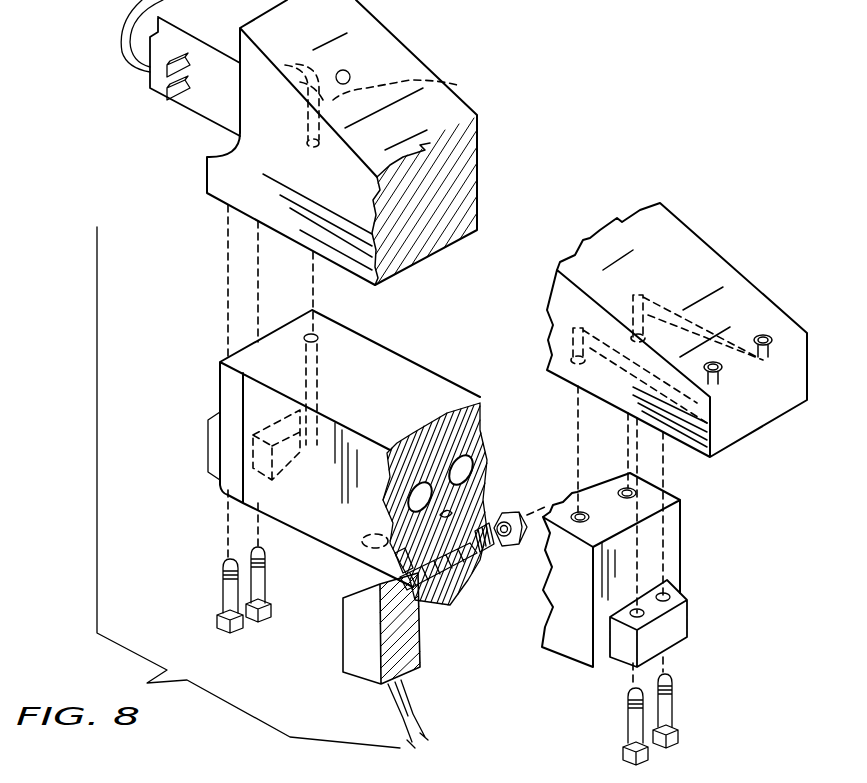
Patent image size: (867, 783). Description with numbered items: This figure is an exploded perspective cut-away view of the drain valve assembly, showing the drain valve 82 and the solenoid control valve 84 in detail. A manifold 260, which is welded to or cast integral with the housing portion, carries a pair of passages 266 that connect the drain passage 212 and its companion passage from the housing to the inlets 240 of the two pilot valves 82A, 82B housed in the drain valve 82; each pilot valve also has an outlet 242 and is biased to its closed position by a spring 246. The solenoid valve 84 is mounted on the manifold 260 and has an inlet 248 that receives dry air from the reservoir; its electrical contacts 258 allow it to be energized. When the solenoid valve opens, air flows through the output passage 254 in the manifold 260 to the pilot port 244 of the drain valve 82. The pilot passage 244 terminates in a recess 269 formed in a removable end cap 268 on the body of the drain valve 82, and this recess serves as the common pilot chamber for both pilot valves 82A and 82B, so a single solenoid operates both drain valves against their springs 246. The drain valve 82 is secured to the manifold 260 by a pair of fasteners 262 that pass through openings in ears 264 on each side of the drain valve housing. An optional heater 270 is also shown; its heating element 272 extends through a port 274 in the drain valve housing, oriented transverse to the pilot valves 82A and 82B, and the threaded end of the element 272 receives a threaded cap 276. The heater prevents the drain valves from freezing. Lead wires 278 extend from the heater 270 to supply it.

The drain passage 212 is at (214, 782).
The solenoid control valve 84 is at (153, 80).
The electrical contacts 258 is at (190, 63).
The manifold 260 is at (233, 187).
The inlet 248 is at (349, 72).
The output passage 254 is at (413, 89).
The pilot port 244 is at (320, 336).
The passages 266 is at (662, 293).
The drain valve 82 is at (230, 475).
The pilot valve 82A is at (426, 483).
The pilot valve 82B is at (468, 460).
The end cap 268 is at (250, 345).
The recess 269 is at (253, 435).
The spring 246 is at (208, 457).
The outlet 242 is at (490, 457).
The threaded cap 276 is at (510, 510).
The port 274 is at (457, 575).
The heating element 272 is at (440, 582).
The heater 270 is at (353, 650).
The lead wires 278 is at (410, 695).
The inlet 240 is at (587, 519).
The ears 264 is at (690, 628).
The fasteners 262 is at (645, 758).